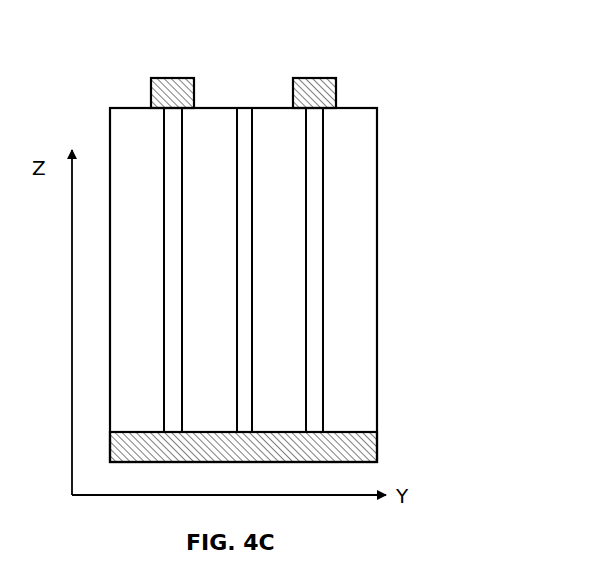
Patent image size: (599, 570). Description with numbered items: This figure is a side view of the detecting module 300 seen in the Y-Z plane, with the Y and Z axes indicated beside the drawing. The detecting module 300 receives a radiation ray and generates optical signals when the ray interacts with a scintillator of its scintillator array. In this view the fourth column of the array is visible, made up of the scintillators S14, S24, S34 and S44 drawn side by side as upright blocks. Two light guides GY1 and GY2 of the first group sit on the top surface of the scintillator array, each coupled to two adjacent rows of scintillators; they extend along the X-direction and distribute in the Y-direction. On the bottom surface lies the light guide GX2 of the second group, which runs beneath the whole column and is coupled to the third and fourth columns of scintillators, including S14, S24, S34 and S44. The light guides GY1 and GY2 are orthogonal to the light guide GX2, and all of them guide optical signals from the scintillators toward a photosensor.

The detecting module 300 is at (450, 227).
The scintillator S14 is at (137, 270).
The scintillator S24 is at (209, 270).
The scintillator S34 is at (279, 270).
The scintillator S44 is at (350, 270).
The light guide GY1 is at (168, 77).
The light guide GY2 is at (315, 77).
The light guide GX2 is at (378, 445).